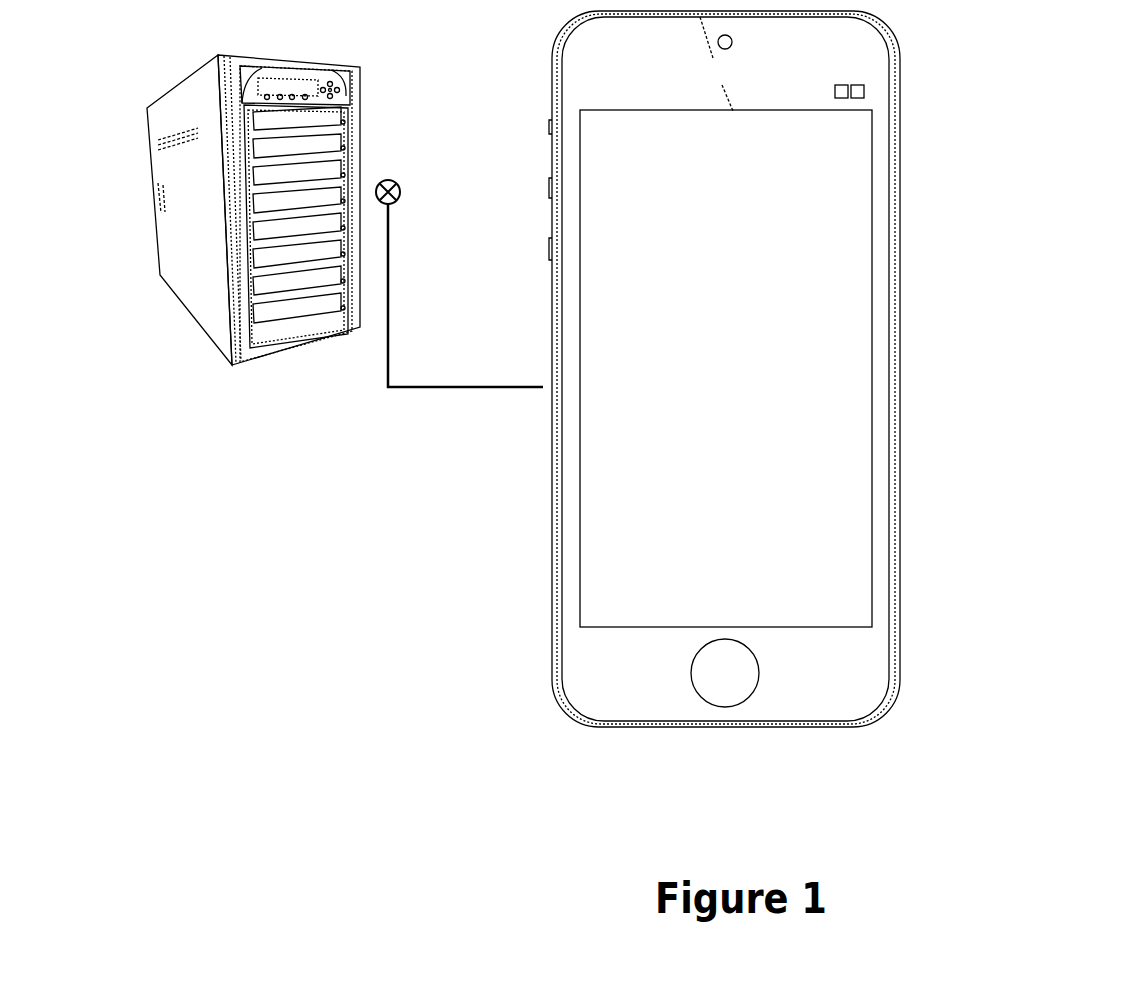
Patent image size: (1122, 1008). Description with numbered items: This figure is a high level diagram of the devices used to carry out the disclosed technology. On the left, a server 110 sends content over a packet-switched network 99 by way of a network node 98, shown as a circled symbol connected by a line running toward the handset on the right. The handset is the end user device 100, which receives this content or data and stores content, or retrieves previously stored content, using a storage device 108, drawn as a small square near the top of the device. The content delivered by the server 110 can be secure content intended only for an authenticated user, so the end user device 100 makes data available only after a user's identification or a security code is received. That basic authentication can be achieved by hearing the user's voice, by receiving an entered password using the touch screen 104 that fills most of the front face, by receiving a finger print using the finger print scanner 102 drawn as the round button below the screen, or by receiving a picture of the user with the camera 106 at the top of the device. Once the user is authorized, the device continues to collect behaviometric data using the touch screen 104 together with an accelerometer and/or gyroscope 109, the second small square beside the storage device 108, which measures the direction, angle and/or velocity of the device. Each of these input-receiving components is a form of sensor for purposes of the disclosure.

The network node 98 is at (389, 177).
The packet-switched network 99 is at (465, 310).
The end user device 100 is at (825, 391).
The finger print scanner 102 is at (745, 662).
The touch screen 104 is at (827, 353).
The camera 106 is at (732, 42).
The storage device 108 is at (836, 98).
The accelerometer and/or gyroscope 109 is at (864, 98).
The server 110 is at (253, 229).